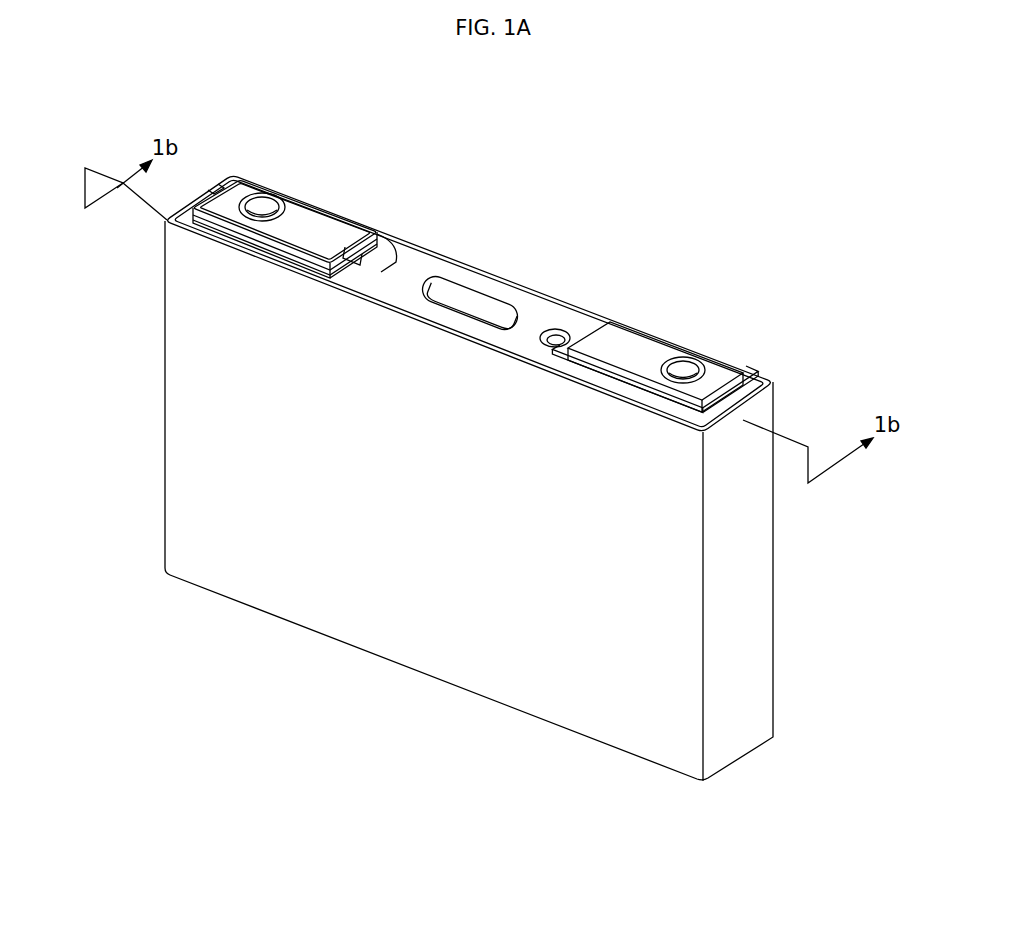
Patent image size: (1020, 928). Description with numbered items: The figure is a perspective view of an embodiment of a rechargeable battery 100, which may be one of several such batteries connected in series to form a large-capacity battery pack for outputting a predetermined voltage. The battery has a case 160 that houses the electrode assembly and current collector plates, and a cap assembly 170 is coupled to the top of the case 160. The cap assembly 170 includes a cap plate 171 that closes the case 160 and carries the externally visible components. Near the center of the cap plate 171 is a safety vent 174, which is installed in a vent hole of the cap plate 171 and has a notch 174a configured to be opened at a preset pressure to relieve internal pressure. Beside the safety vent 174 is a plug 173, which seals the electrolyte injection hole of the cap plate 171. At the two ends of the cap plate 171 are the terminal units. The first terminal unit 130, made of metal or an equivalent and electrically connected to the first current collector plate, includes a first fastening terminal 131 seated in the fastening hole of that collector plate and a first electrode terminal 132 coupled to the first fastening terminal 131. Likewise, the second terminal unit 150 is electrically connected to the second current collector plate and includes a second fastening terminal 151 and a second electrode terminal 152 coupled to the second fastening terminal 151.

The rechargeable battery 100 is at (855, 187).
The first terminal unit 130 is at (740, 287).
The first fastening terminal 131 is at (683, 368).
The first electrode terminal 132 is at (630, 343).
The second terminal unit 150 is at (280, 118).
The second fastening terminal 151 is at (262, 207).
The second electrode terminal 152 is at (326, 221).
The case 160 is at (757, 569).
The cap assembly 170 is at (435, 163).
The cap plate 171 is at (413, 260).
The plug 173 is at (555, 340).
The safety vent 174 is at (492, 312).
The notch 174a is at (457, 303).